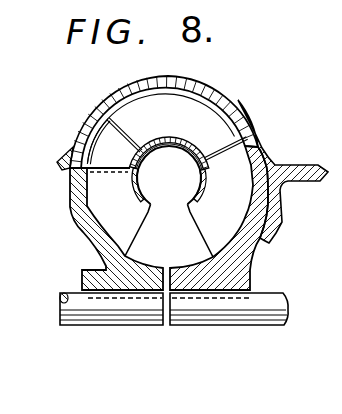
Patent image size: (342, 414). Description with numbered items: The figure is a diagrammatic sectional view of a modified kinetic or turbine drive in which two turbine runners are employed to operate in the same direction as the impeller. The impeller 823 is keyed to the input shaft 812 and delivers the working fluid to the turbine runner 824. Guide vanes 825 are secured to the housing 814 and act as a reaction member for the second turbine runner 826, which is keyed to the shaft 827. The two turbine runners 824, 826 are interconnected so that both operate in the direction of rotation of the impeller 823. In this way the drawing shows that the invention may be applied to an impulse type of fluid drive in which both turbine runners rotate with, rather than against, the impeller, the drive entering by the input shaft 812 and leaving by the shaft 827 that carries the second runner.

The input shaft 812 is at (99, 325).
The housing 814 is at (307, 157).
The impeller 823 is at (100, 208).
The turbine runner 824 is at (107, 141).
The guide vanes 825 is at (195, 112).
The turbine runner 826 is at (240, 160).
The shaft 827 is at (288, 322).